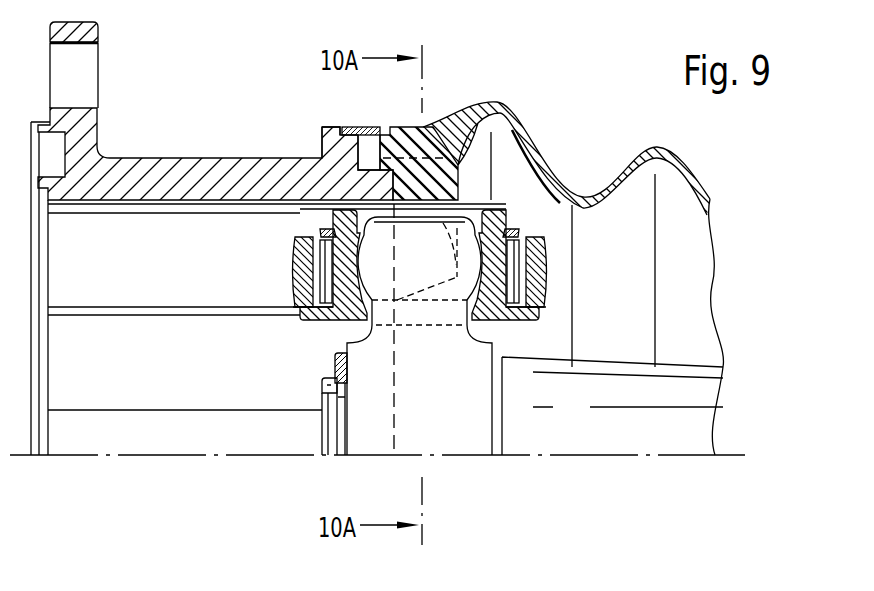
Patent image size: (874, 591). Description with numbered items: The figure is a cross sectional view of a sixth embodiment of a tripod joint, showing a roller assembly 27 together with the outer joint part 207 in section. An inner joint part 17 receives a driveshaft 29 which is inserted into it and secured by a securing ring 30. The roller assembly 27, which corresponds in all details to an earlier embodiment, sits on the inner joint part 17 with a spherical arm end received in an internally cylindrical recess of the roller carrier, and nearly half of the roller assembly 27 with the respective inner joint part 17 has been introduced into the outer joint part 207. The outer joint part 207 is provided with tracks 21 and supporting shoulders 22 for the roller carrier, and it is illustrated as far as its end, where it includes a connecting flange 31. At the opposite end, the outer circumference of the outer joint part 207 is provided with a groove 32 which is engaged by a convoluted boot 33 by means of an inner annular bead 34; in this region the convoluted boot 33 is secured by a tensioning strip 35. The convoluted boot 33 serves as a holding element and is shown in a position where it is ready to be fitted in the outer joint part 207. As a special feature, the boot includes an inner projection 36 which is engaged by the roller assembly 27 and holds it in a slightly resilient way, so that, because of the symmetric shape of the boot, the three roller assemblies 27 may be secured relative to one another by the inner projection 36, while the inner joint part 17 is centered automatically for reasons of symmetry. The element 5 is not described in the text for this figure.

The spherical roller 5 is at (432, 297).
The inner joint part 17 is at (378, 412).
The tracks 21 is at (162, 298).
The supporting shoulders 22 is at (109, 317).
The roller assembly 27 is at (298, 210).
The driveshaft 29 is at (613, 423).
The securing ring 30 is at (336, 360).
The connecting flange 31 is at (87, 34).
The groove 32 is at (357, 131).
The convoluted boot 33 is at (537, 141).
The inner annular bead 34 is at (381, 163).
The tensioning strip 35 is at (373, 162).
The inner projection 36 is at (481, 115).
The outer joint part 207 is at (175, 170).